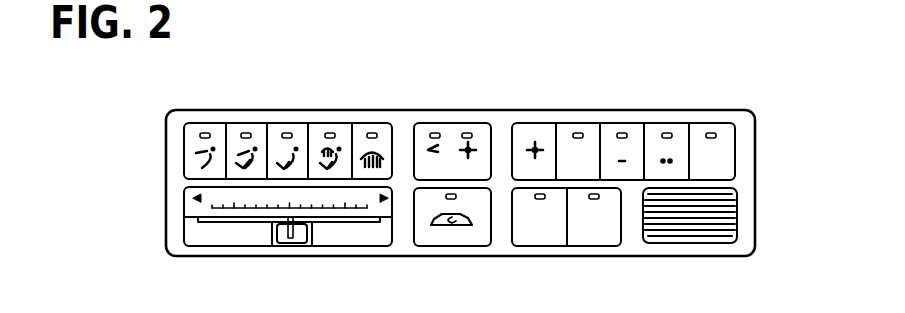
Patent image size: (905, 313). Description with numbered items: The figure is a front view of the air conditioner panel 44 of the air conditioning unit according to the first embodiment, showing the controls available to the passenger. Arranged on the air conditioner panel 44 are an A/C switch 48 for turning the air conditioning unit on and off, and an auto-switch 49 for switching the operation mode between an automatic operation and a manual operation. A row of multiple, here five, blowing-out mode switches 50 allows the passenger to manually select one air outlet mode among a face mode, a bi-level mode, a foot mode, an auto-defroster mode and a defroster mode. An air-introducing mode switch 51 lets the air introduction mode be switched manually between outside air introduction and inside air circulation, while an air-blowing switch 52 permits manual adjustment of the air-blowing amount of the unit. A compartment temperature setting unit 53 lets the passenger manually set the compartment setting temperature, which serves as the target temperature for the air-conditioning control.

The air conditioner panel 44 is at (757, 142).
The A/C switch 48 is at (558, 237).
The auto-switch 49 is at (468, 123).
The blowing-out mode switches 50 is at (252, 123).
The air-introducing mode switch 51 is at (441, 238).
The air-blowing switch 52 is at (536, 123).
The compartment temperature setting unit 53 is at (250, 236).